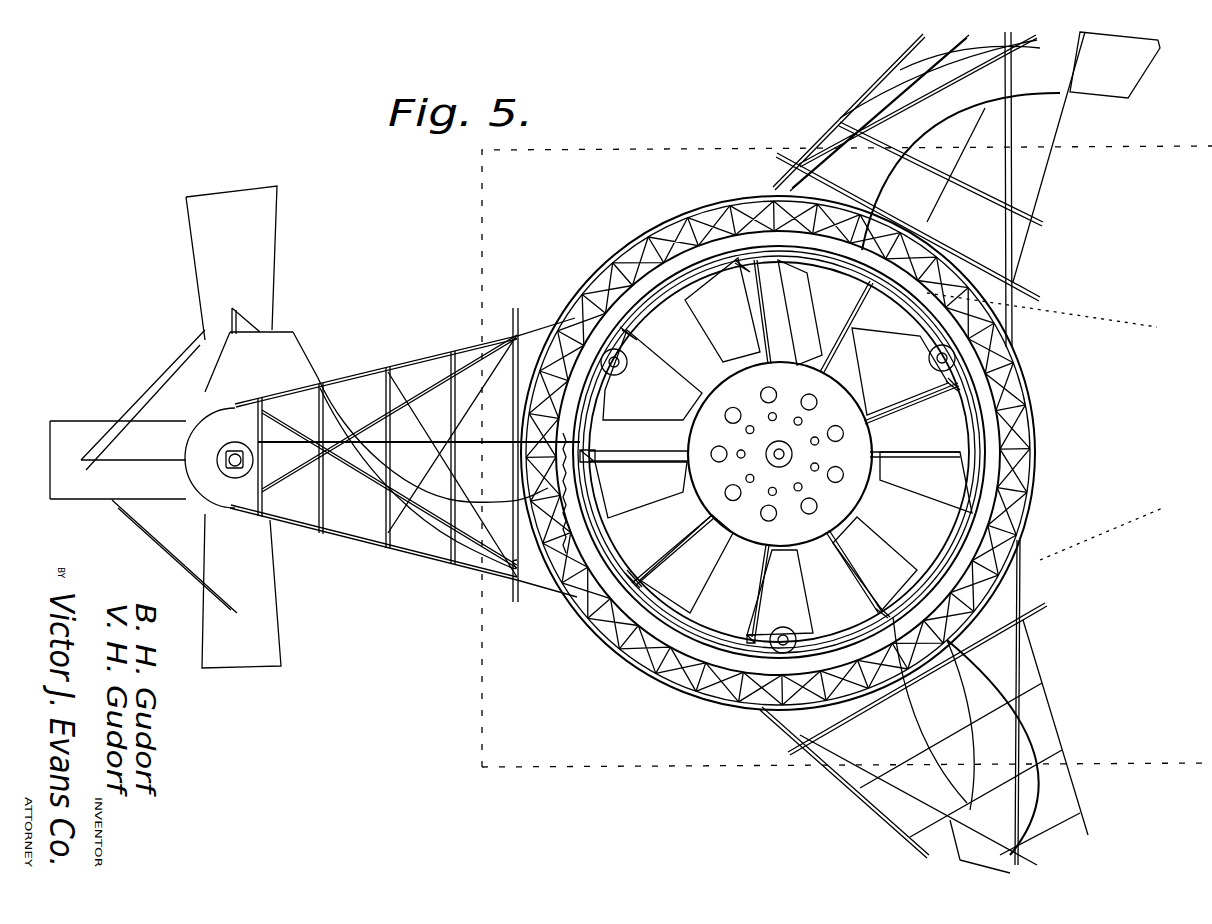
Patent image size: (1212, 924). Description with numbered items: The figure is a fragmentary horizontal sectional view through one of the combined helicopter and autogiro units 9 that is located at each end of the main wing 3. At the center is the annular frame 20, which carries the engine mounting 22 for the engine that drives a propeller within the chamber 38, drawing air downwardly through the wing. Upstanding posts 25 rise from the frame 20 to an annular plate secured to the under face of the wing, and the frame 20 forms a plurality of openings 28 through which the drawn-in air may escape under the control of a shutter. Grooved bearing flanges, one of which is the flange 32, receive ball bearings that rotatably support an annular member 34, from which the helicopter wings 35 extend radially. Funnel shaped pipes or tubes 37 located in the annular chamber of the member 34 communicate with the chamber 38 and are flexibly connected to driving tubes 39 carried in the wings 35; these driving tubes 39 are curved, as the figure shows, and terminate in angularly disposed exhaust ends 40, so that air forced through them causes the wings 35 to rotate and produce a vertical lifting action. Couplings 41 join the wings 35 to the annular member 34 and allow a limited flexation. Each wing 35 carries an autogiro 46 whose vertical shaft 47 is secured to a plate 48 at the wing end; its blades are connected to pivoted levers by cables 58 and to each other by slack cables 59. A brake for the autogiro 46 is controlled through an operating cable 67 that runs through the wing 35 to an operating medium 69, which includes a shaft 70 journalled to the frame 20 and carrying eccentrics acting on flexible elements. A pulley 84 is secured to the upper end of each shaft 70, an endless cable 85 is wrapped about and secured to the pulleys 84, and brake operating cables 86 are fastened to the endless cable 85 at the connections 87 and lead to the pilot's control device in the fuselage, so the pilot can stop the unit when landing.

The main wing 3 is at (652, 150).
The combined helicopter and autogiro 9 is at (442, 348).
The frame 20 is at (676, 396).
The engine mounting 22 is at (862, 442).
The upstanding posts 25 is at (737, 295).
The openings 28 is at (810, 302).
The bearing flange 32 is at (636, 244).
The annular member 34 is at (724, 206).
The helicopter wings 35 is at (1053, 183).
The funnel shaped pipes or tubes 37 is at (520, 466).
The chamber 38 is at (900, 371).
The driving tubes 39 is at (300, 366).
The exhaust ends 40 is at (290, 316).
The couplings 41 is at (549, 302).
The autogiro 46 is at (270, 212).
The vertical shaft 47 is at (218, 494).
The plate 48 is at (213, 428).
The cable 58 is at (100, 500).
The cables 59 is at (160, 382).
The operating cable 67 is at (428, 439).
The operating medium 69 is at (782, 628).
The shaft 70 is at (626, 366).
The pulleys 84 is at (929, 364).
The endless cable 85 is at (787, 264).
The brake operating cables 86 is at (1093, 318).
The connection of brake operating cables 87 is at (893, 600).